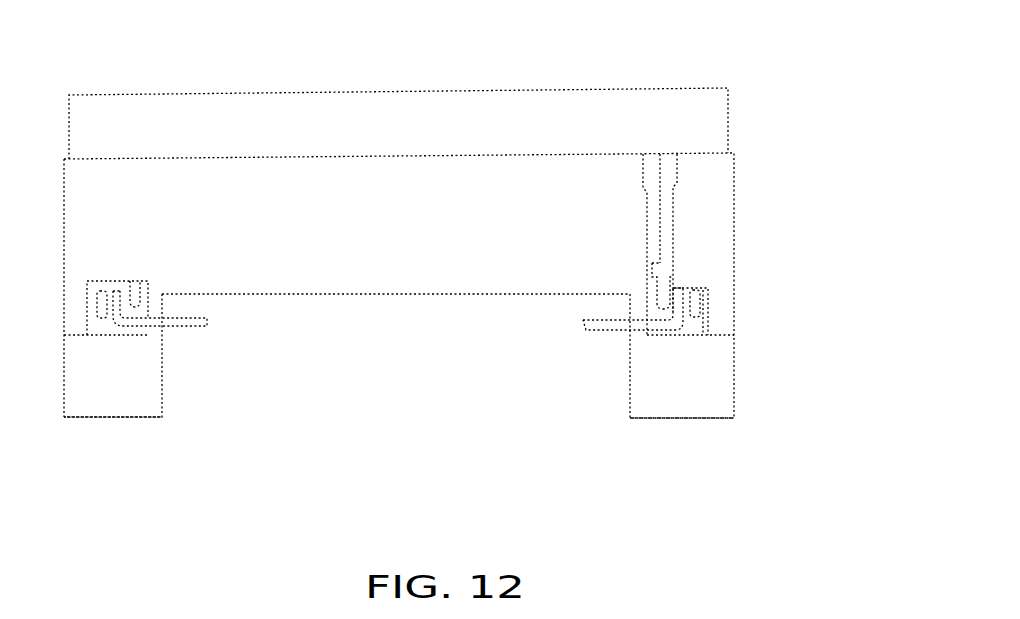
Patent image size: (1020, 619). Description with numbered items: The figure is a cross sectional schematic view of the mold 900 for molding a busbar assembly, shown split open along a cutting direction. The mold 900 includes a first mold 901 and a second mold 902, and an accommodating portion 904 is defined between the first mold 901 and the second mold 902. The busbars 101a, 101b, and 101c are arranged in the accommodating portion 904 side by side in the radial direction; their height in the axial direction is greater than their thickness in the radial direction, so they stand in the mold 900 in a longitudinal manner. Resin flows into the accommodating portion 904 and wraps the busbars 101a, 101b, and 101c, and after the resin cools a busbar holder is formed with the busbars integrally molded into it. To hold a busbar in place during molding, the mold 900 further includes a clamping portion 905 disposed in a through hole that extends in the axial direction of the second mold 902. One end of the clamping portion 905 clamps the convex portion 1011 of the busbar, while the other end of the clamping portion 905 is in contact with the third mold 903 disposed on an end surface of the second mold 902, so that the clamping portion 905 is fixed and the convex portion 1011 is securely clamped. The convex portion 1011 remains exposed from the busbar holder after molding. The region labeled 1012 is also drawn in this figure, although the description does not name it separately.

The mold 900 is at (283, 65).
The first mold 901 is at (645, 398).
The second mold 902 is at (333, 242).
The third mold 903 is at (532, 138).
The accommodating portion 904 is at (102, 325).
The clamping portion 905 is at (667, 228).
The convex portion 1011 is at (648, 340).
The second connecting terminal 1012 is at (208, 322).
The busbar 101a is at (650, 296).
The busbar 101b is at (693, 318).
The busbar 101c is at (703, 313).